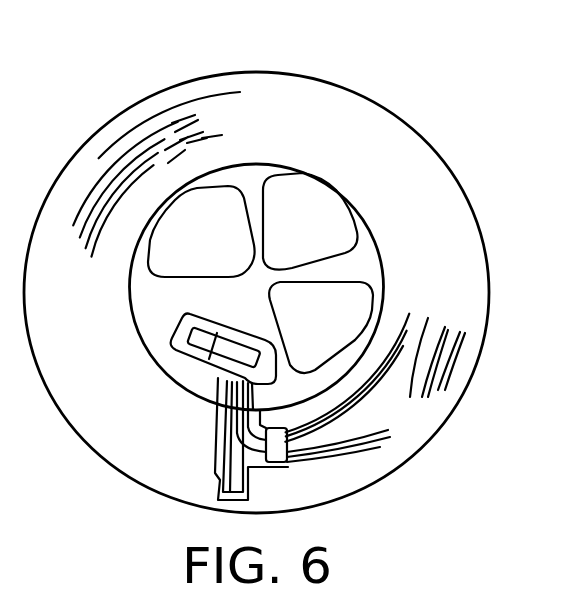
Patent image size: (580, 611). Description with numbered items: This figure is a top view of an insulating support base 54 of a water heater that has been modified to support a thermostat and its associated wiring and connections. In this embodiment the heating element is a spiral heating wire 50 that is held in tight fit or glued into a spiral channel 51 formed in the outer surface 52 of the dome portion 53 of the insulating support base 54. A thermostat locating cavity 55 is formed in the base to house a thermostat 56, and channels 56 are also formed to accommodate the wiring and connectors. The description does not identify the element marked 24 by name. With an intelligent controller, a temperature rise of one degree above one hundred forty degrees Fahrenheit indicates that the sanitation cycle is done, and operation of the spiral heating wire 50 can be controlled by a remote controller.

The tire 24 is at (194, 88).
The spiral heating wire 50 is at (363, 381).
The spiral channel 51 is at (425, 368).
The outer surface 52 is at (448, 253).
The dome portion 53 is at (414, 182).
The insulating support base 54 is at (347, 65).
The thermostat locating cavity 55 is at (237, 340).
The thermostat 56 is at (247, 418).